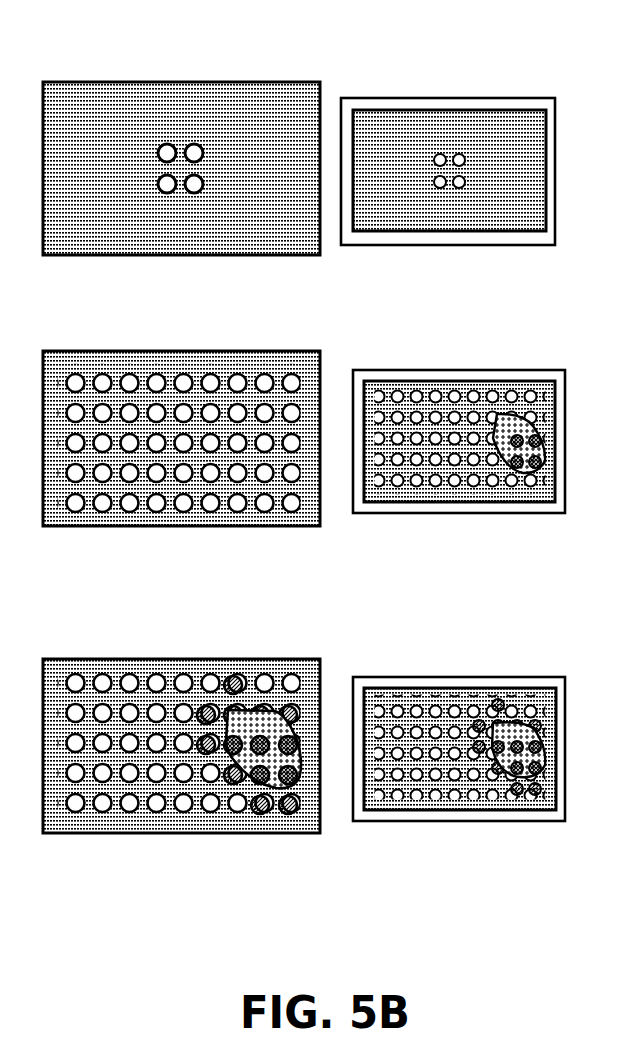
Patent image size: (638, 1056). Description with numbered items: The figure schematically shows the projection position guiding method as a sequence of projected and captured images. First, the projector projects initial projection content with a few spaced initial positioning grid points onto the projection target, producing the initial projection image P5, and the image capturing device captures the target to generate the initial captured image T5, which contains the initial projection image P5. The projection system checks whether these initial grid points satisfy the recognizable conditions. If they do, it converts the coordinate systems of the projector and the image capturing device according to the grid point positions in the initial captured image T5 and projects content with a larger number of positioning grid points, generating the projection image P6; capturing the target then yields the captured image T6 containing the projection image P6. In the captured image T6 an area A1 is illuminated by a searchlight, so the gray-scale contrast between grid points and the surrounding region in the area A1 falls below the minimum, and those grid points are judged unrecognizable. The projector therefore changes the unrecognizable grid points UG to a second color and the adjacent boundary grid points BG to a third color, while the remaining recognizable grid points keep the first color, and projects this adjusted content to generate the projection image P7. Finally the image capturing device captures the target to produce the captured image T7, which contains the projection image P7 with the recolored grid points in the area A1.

The initial projection image P5 is at (173, 74).
The initial captured image T5 is at (420, 90).
The projection image P6 is at (173, 343).
The captured image T6 is at (433, 362).
The projection image P7 is at (173, 650).
The captured image T7 is at (450, 669).
The area A1 is at (518, 460).
The unrecognizable grid points UG is at (280, 805).
The boundary grid points BG is at (252, 805).